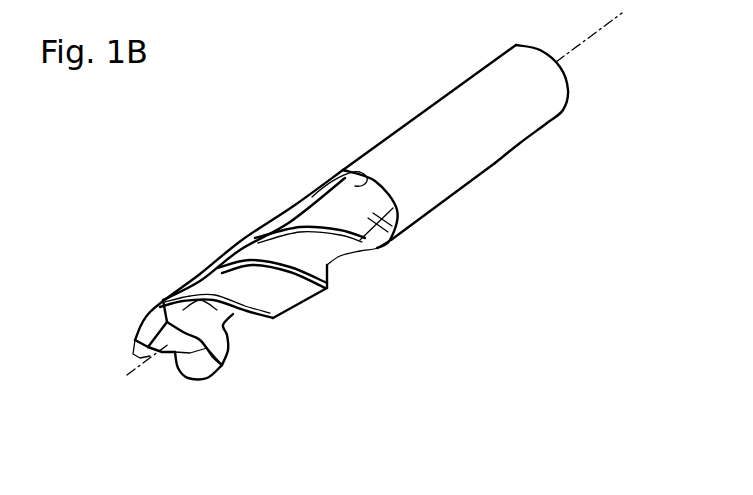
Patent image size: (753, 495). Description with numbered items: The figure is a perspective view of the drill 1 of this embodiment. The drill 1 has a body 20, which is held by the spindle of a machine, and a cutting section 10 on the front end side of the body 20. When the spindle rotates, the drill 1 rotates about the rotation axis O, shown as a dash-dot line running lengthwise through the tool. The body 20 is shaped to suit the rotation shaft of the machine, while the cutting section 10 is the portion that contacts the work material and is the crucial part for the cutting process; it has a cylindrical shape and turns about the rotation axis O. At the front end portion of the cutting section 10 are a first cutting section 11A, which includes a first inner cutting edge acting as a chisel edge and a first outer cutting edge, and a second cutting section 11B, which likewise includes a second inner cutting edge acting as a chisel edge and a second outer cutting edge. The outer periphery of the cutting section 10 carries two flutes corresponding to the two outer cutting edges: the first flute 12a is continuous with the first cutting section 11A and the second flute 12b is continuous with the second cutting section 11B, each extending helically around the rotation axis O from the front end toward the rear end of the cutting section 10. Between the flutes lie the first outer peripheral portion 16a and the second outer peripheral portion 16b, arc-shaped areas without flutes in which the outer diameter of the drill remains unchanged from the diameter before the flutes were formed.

The drill 1 is at (262, 156).
The rotation axis O is at (374, 187).
The cutting section 10 is at (326, 163).
The body 20 is at (506, 22).
The first cutting section 11A is at (183, 377).
The second cutting section 11B is at (148, 347).
The first flute 12a is at (217, 323).
The second flute 12b is at (323, 255).
The first outer peripheral portion 16a is at (263, 282).
The second outer peripheral portion 16b is at (393, 237).